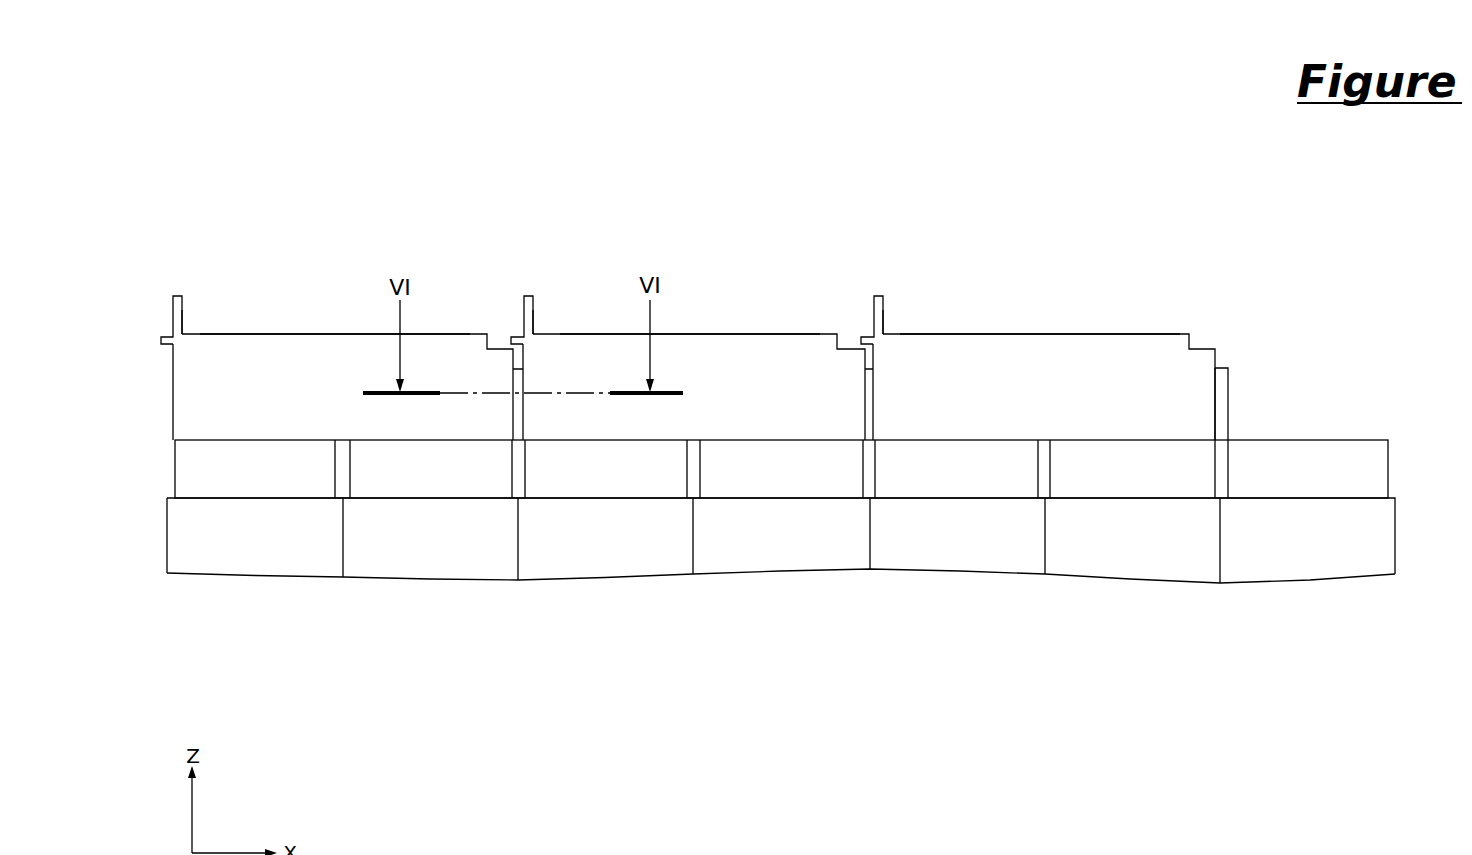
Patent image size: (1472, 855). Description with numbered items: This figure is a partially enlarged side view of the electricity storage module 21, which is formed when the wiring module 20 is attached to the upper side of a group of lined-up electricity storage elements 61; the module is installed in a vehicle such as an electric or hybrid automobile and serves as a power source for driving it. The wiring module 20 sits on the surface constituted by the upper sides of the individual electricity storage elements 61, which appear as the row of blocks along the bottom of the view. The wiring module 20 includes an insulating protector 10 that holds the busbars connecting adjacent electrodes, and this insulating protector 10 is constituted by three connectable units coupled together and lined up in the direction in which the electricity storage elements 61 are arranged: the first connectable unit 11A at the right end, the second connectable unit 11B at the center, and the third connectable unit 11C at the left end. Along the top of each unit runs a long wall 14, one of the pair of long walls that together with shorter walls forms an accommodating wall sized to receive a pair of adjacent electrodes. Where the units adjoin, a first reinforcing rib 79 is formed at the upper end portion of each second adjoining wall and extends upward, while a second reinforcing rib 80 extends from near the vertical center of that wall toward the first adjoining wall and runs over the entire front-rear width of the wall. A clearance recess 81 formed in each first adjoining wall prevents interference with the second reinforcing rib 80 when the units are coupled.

The insulating protector 10 is at (310, 336).
The first connectable unit 11A is at (1095, 357).
The second connectable unit 11B is at (733, 357).
The third connectable unit 11C is at (265, 357).
The long wall 14 is at (336, 350).
The wiring module 20 is at (1190, 383).
The electricity storage module 21 is at (1269, 271).
The electricity storage element 61 is at (266, 563).
The first reinforcing rib 79 is at (181, 310).
The second reinforcing rib 80 is at (162, 337).
The clearance recess 81 is at (493, 345).